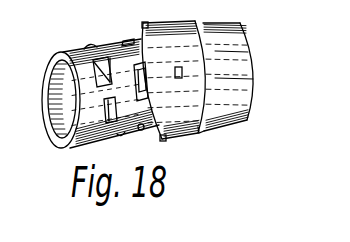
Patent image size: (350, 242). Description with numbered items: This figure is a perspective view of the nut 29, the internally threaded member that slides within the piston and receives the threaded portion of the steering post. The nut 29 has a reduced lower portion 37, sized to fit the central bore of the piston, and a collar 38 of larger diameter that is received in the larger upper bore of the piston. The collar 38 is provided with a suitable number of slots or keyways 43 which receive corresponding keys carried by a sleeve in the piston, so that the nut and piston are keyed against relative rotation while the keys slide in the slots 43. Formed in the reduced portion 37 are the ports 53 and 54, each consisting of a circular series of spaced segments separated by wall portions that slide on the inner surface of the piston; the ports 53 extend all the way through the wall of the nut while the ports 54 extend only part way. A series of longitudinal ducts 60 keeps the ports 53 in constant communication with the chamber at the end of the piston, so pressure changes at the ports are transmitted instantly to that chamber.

The nut 29 is at (63, 52).
The ports 54 is at (96, 37).
The ports 53 is at (126, 40).
The slots or keyways 43 is at (146, 22).
The longitudinal ducts 60 is at (236, 52).
The lower portion of the nut 37 is at (123, 133).
The collar 38 is at (198, 133).